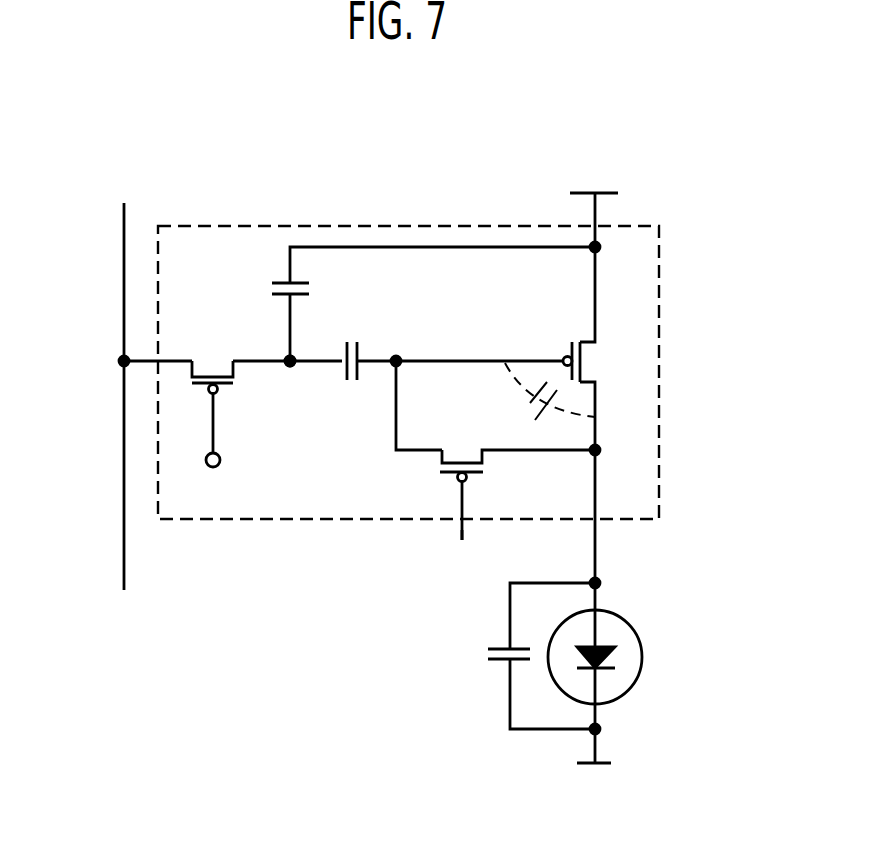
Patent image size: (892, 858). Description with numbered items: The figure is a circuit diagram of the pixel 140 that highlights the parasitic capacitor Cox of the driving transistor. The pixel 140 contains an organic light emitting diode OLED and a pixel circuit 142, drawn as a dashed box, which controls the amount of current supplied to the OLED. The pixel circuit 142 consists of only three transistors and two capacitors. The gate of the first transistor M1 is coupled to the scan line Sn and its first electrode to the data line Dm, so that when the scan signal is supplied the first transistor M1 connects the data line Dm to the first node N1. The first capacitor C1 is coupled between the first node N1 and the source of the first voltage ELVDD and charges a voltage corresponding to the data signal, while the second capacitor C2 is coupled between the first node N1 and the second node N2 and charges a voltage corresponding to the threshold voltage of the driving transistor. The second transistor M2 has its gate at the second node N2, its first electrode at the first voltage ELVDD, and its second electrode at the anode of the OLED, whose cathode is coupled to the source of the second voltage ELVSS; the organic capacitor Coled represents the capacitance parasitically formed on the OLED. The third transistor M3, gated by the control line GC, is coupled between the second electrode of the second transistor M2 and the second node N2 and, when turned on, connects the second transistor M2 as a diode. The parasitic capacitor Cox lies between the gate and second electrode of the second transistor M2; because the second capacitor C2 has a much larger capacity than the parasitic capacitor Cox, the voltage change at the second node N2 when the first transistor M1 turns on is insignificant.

The pixel 140 is at (723, 190).
The pixel circuit 142 is at (660, 297).
The data line Dm is at (123, 376).
The scan line Sn is at (213, 479).
The first transistor M1 is at (212, 391).
The second transistor M2 is at (593, 348).
The third transistor M3 is at (517, 479).
The first capacitor C1 is at (433, 304).
The second capacitor C2 is at (350, 344).
The first node N1 is at (289, 382).
The second node N2 is at (416, 403).
The parasitic capacitor Cox is at (540, 393).
The control line GC is at (460, 555).
The first voltage ELVDD is at (591, 198).
The second voltage ELVSS is at (592, 784).
The organic capacitor Coled is at (509, 656).
The organic light emitting diode OLED is at (626, 657).